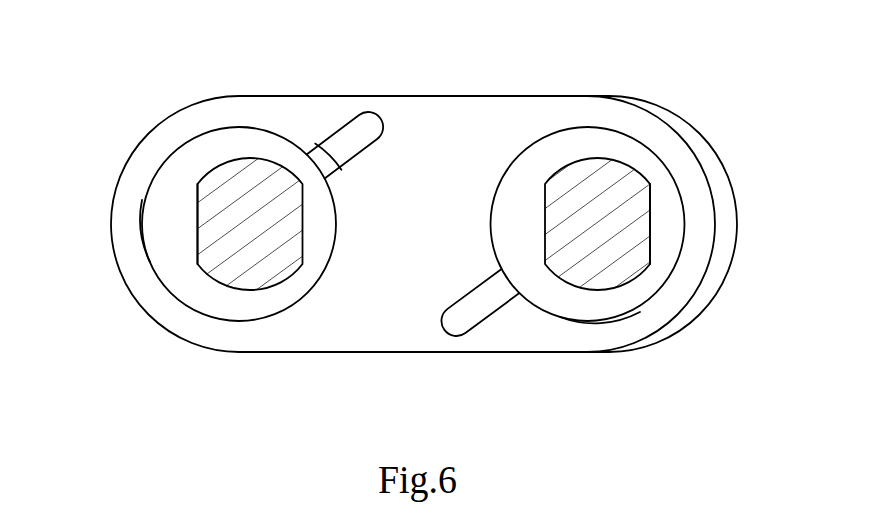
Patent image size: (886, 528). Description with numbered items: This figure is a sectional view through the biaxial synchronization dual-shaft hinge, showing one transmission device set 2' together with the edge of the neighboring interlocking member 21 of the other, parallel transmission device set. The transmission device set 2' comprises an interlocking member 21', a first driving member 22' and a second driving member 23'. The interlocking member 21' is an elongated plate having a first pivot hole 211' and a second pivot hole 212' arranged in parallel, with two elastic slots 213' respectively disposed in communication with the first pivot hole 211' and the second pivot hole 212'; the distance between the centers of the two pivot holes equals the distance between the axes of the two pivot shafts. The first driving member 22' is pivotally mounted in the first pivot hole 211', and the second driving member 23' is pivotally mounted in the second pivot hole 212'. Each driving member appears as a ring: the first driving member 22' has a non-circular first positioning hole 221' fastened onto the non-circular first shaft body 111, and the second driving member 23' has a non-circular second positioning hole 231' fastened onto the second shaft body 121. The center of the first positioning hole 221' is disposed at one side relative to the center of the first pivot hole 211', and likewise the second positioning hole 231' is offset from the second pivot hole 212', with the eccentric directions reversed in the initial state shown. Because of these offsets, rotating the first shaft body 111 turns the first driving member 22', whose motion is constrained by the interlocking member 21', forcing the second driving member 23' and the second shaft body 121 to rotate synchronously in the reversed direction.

The transmission device set 2' is at (424, 52).
The interlocking member 21 is at (564, 224).
The interlocking member 21' is at (396, 190).
The first driving member 22' is at (631, 256).
The second driving member 23' is at (192, 253).
The first shaft body 111 is at (630, 170).
The second shaft body 121 is at (200, 202).
The first pivot hole 211' is at (644, 377).
The second pivot hole 212' is at (87, 254).
The elastic slot 213' is at (417, 221).
The first positioning hole 221' is at (751, 248).
The second positioning hole 231' is at (110, 219).